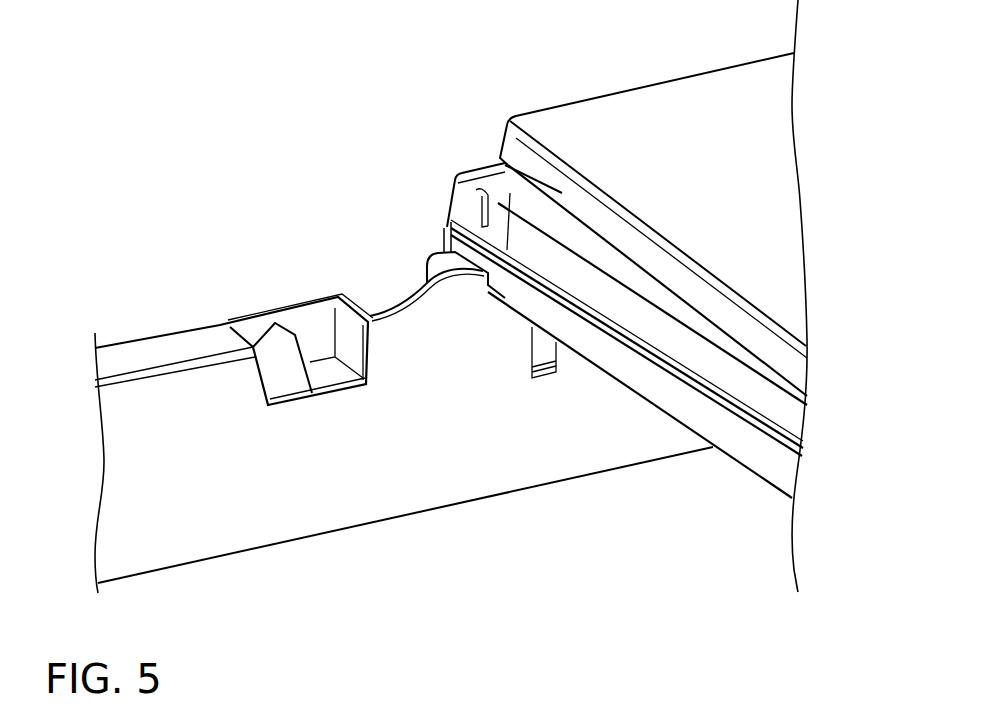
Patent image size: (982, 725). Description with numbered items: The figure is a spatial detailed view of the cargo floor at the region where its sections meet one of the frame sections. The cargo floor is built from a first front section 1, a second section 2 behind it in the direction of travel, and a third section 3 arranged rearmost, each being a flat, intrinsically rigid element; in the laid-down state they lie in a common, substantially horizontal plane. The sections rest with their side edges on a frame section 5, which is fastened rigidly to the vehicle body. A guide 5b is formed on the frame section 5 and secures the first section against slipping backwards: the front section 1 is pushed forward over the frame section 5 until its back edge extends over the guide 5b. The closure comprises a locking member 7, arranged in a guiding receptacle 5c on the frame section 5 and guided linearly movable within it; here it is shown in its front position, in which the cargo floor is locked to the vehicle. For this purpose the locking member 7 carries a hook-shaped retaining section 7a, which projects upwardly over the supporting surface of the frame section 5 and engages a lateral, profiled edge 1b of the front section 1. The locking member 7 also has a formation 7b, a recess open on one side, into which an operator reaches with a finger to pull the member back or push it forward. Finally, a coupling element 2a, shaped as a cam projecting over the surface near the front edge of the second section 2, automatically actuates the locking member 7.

The first front section 1 is at (767, 463).
The lateral profiled edge 1b is at (445, 233).
The second section 2 is at (748, 398).
The coupling element 2a is at (449, 160).
The third section 3 is at (583, 120).
The frame section 5 is at (135, 545).
The guide 5b is at (399, 309).
The guiding receptacle 5c is at (227, 306).
The locking member 7 is at (288, 374).
The retaining section 7a is at (436, 262).
The formation 7b is at (334, 370).